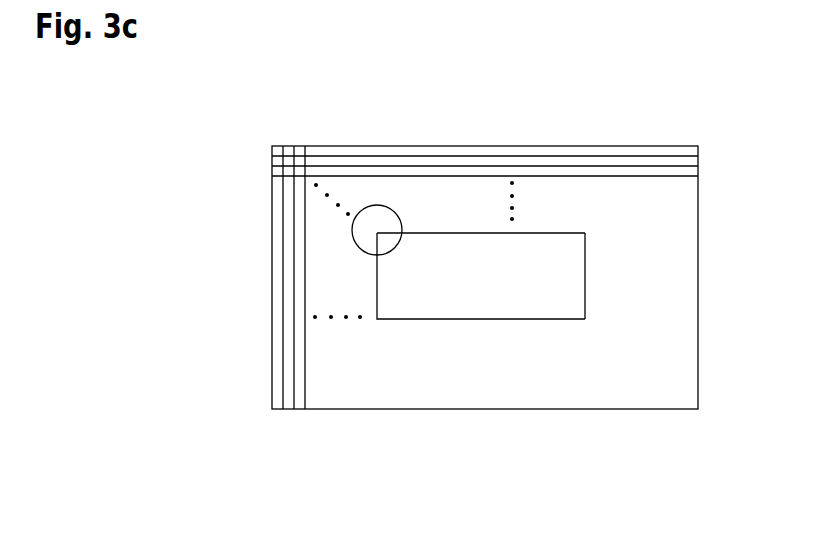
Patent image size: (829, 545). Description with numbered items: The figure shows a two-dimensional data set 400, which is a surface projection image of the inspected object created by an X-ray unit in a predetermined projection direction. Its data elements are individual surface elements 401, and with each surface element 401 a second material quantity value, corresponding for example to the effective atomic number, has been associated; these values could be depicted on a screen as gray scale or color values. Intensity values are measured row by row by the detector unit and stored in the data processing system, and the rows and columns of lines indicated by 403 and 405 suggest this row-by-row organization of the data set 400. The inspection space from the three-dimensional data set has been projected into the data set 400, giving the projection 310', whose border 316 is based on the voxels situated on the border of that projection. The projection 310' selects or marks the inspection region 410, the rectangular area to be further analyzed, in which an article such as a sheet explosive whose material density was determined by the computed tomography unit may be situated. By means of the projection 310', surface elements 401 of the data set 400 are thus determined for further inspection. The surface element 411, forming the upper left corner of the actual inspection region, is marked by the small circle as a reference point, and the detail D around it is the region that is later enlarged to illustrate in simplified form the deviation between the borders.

The two-dimensional data set 400 is at (185, 143).
The surface element 401 is at (303, 166).
The row lines 403 is at (272, 175).
The column lines 405 is at (306, 152).
The surface element 411 is at (380, 233).
The detail D is at (354, 240).
The projection of the inspection space 310' is at (481, 357).
The border of the projection 316 is at (546, 237).
The inspection region 410 is at (563, 280).